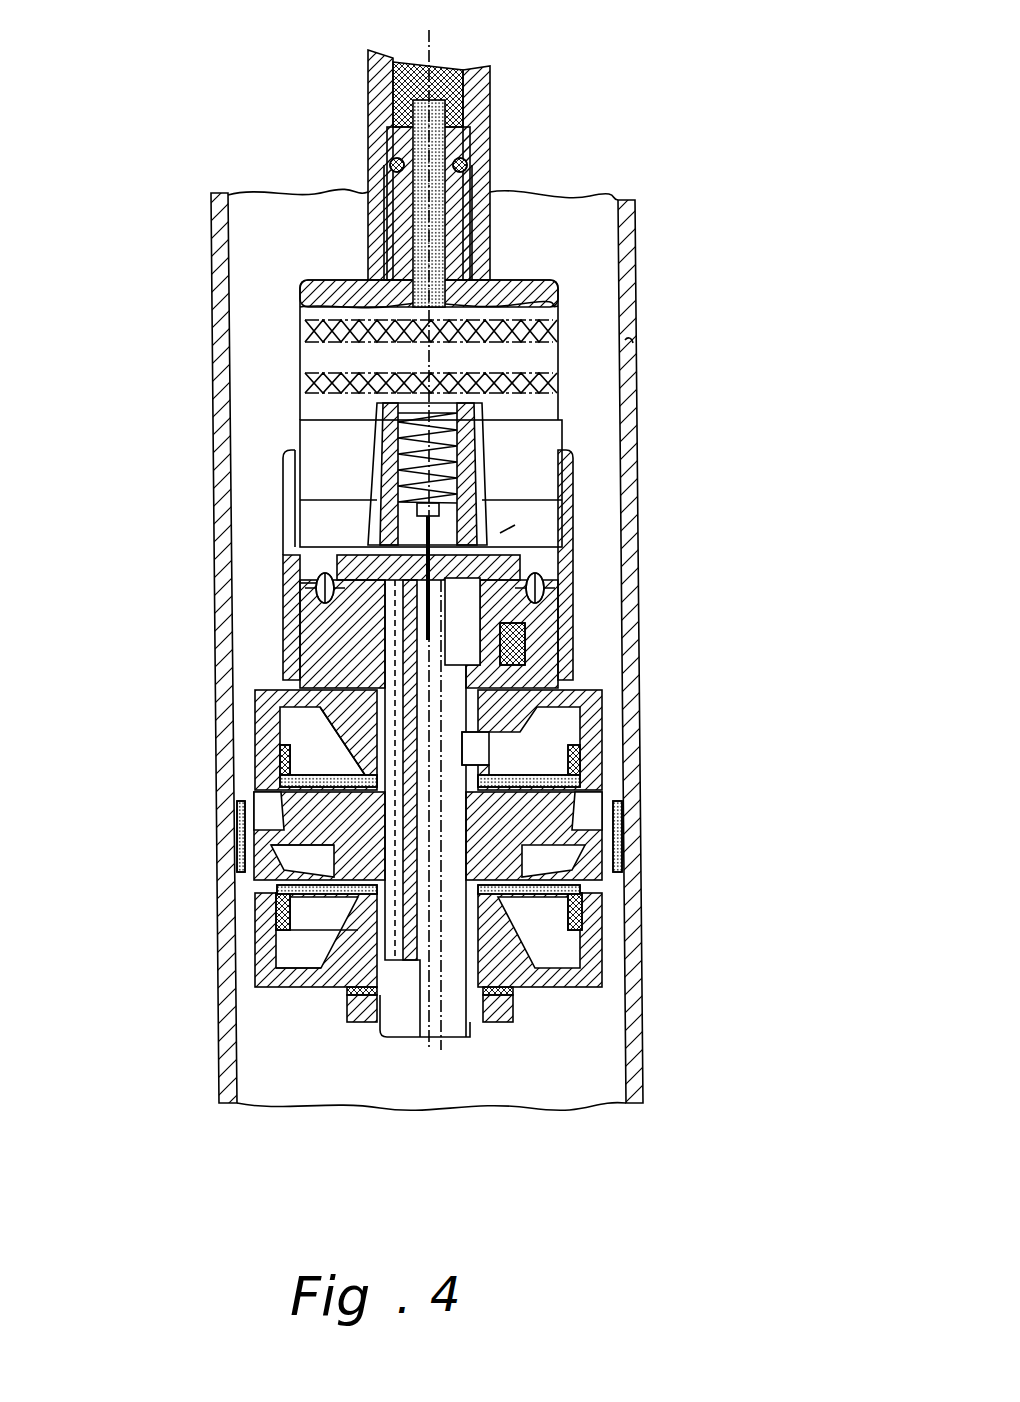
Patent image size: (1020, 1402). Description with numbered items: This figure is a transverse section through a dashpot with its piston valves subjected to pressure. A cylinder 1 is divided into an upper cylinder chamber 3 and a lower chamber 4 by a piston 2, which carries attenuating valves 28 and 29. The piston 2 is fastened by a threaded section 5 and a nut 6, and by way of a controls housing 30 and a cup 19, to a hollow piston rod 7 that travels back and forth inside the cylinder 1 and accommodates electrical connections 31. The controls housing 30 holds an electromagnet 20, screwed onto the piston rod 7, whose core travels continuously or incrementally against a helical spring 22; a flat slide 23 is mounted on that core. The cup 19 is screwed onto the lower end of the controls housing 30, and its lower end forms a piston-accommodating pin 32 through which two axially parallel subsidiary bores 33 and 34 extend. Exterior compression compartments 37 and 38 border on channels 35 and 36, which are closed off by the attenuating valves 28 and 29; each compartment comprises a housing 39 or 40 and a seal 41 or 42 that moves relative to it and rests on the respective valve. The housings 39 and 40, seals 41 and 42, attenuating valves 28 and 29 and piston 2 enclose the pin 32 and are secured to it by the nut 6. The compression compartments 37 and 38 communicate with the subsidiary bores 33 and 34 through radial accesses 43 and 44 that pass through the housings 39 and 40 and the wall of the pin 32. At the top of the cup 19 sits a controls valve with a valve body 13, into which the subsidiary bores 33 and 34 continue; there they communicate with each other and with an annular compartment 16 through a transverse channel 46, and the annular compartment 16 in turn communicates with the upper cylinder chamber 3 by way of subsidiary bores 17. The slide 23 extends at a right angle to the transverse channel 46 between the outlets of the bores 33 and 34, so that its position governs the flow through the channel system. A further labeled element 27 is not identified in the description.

The cylinder 1 is at (625, 340).
The piston 2 is at (625, 812).
The upper cylinder chamber 3 is at (598, 452).
The cylinder chamber 4 is at (585, 1032).
The threaded section 5 is at (428, 1030).
The nut 6 is at (525, 1020).
The piston rod 7 is at (488, 145).
The valve body 13 is at (365, 537).
The annular compartment 16 is at (490, 562).
The subsidiary bores 17 is at (300, 602).
The cup 19 is at (527, 648).
The electromagnet 20 is at (533, 357).
The helical spring 22 is at (377, 449).
The slide 23 is at (375, 540).
The chamber 27 is at (526, 521).
The attenuating valve 28 is at (585, 772).
The attenuating valve 29 is at (598, 888).
The controls housing 30 is at (530, 443).
The electrical connections 31 is at (448, 130).
The piston-accommodating pin 32 is at (241, 810).
The subsidiary bore 33 is at (279, 890).
The subsidiary bore 34 is at (455, 693).
The channel 35 is at (276, 860).
The channel 36 is at (620, 858).
The compression compartment 37 is at (297, 725).
The compression compartment 38 is at (297, 946).
The housing 39 is at (279, 697).
The housing 40 is at (297, 960).
The seal 41 is at (281, 782).
The seal 42 is at (279, 910).
The radial access 43 is at (490, 748).
The radial access 44 is at (350, 988).
The transverse channel 46 is at (317, 583).